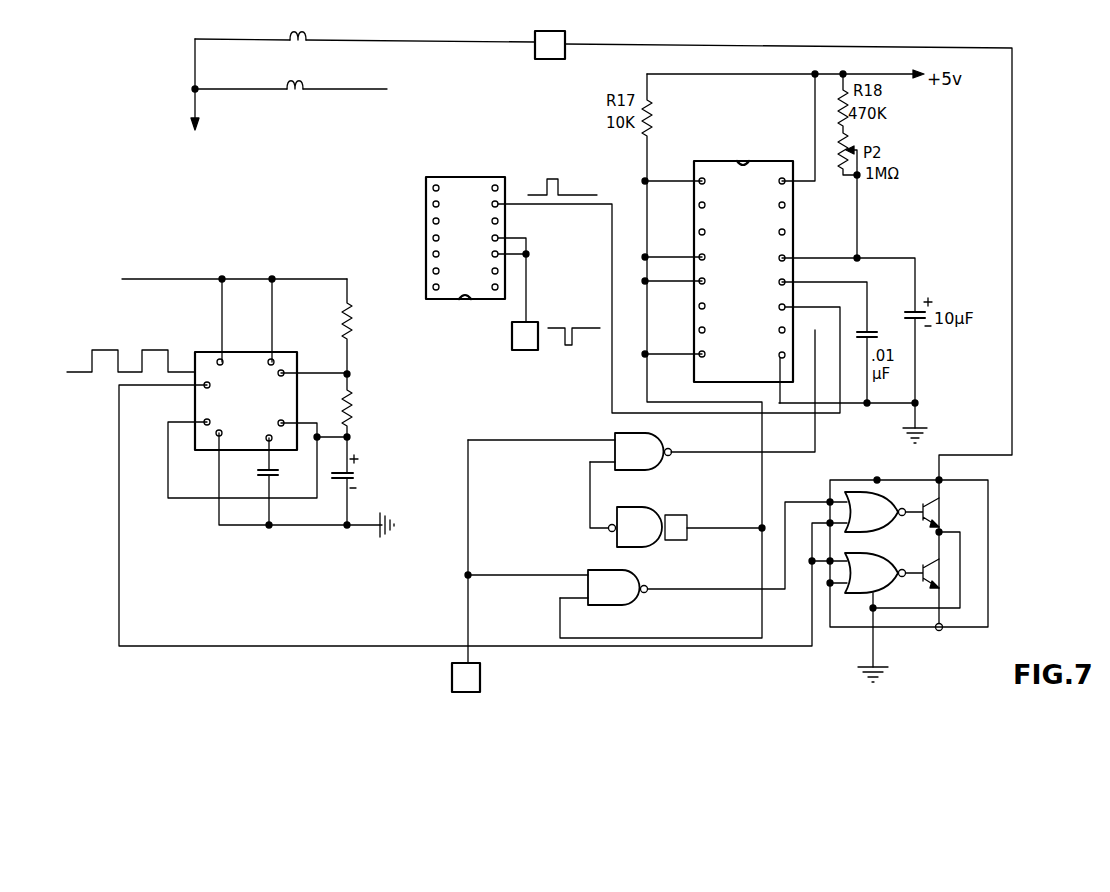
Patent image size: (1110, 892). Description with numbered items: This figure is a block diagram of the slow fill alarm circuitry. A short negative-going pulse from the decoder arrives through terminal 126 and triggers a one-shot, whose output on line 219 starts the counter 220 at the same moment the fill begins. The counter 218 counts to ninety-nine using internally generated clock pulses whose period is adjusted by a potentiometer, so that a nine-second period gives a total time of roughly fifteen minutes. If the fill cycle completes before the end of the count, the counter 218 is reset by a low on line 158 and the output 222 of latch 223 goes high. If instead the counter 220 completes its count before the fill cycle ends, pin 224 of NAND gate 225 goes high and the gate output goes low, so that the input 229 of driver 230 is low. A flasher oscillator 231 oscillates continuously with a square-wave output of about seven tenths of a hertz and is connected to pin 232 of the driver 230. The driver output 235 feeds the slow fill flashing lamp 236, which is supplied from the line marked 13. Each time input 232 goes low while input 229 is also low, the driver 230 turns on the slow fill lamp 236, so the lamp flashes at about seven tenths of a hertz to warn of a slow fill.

The slow fill flashing lamp 236 is at (308, 36).
The connection to element 13 is at (550, 45).
The counter 218 is at (482, 183).
The one-shot output line 219 is at (608, 202).
The counter 220 is at (765, 168).
The terminal 126 is at (512, 336).
The latch output 222 is at (672, 452).
The latch 223 is at (582, 528).
The NAND gate 225 is at (635, 570).
The NAND gate pin 224 is at (611, 608).
The flasher oscillator 231 is at (285, 506).
The driver input pin 232 is at (830, 523).
The driver input 229 is at (830, 502).
The driver 230 is at (988, 553).
The driver output 235 is at (943, 481).
The reset line 158 is at (452, 680).